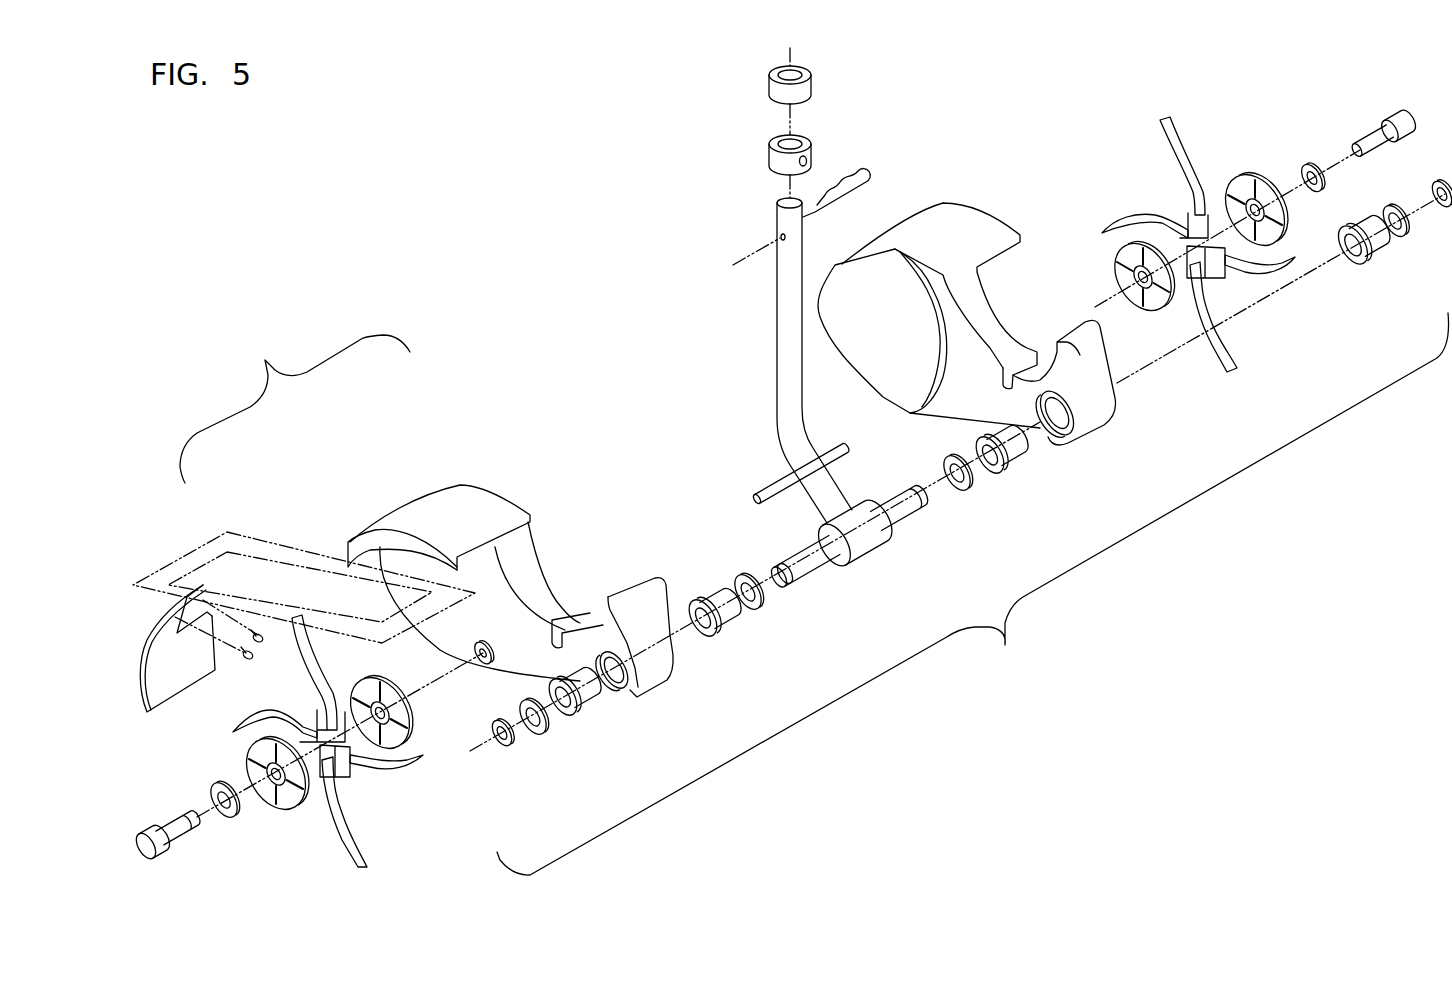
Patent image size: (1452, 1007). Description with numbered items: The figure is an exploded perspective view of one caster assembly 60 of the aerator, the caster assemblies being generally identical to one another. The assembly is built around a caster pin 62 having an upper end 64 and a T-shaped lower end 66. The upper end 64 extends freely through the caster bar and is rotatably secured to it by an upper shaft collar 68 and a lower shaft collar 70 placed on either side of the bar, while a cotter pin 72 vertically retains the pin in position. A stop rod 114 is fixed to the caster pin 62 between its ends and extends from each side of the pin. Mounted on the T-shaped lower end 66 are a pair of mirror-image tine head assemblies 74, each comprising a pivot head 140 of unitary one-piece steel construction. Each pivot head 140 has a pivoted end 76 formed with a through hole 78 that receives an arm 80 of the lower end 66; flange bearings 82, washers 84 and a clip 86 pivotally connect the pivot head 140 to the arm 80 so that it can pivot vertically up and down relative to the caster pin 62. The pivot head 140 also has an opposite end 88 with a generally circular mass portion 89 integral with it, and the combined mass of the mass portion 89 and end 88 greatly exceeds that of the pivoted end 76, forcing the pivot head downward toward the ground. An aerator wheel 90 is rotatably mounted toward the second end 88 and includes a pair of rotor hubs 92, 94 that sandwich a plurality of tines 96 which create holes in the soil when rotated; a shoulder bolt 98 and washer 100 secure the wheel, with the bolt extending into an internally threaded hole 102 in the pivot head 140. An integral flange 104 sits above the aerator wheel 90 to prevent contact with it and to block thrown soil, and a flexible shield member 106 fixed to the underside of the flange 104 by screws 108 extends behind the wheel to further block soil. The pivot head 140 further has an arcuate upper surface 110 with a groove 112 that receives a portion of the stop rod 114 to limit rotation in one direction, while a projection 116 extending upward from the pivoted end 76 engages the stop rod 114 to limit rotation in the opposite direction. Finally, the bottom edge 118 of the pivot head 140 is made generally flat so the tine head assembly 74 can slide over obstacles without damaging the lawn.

The caster assembly 60 is at (973, 594).
The caster pin 62 is at (771, 358).
The upper end 64 is at (782, 223).
The T-shaped lower end 66 is at (855, 525).
The upper shaft collar 68 is at (807, 72).
The lower shaft collar 70 is at (808, 140).
The cotter pin 72 is at (868, 178).
The tine head assembly 74 is at (295, 404).
The pivoted end 76 is at (669, 617).
The through hole 78 is at (619, 678).
The arm 80 is at (815, 565).
The flange bearing 82 is at (588, 702).
The washer 84 is at (537, 737).
The clip 86 is at (500, 747).
The opposite end 88 is at (847, 337).
The mass portion 89 is at (897, 272).
The aerator wheel 90 is at (208, 763).
The rotor hub 92 is at (368, 692).
The rotor hub 94 is at (292, 803).
The tines 96 is at (292, 715).
The shoulder bolt 98 is at (170, 840).
The washer 100 is at (230, 813).
The internally threaded hole 102 is at (482, 653).
The integral flange 104 is at (375, 538).
The flexible shield member 106 is at (173, 682).
The screws 108 is at (257, 636).
The arcuate upper surface 110 is at (530, 570).
The groove 112 is at (575, 620).
The stop rod 114 is at (783, 485).
The projection 116 is at (632, 593).
The bottom edge 118 is at (962, 418).
The pivot head 140 is at (486, 450).